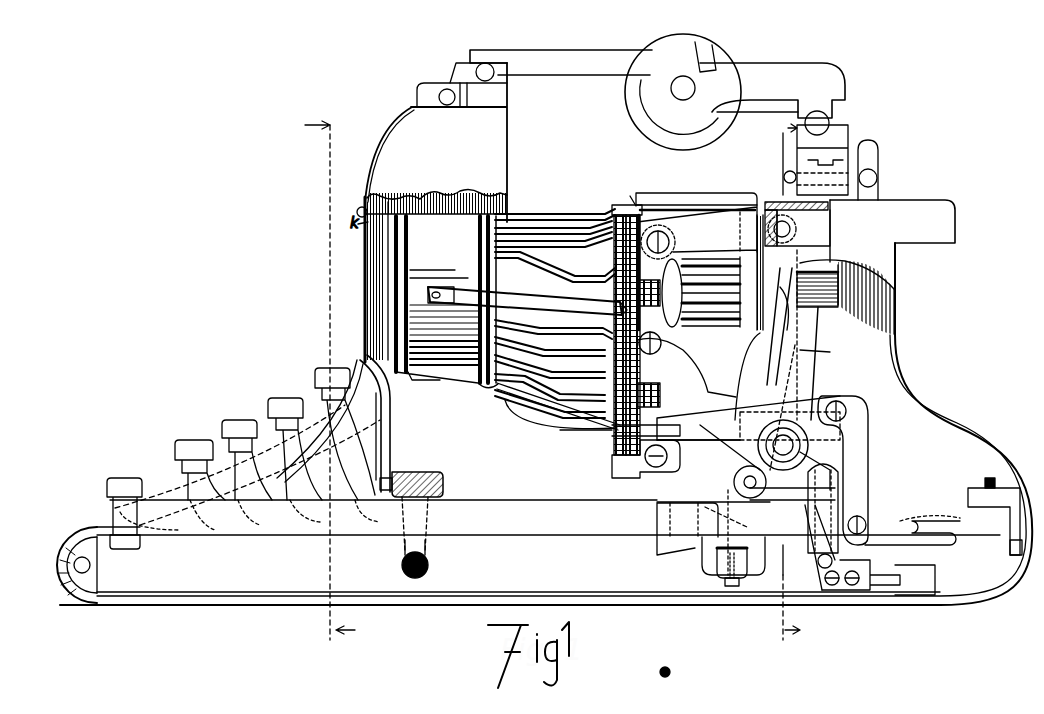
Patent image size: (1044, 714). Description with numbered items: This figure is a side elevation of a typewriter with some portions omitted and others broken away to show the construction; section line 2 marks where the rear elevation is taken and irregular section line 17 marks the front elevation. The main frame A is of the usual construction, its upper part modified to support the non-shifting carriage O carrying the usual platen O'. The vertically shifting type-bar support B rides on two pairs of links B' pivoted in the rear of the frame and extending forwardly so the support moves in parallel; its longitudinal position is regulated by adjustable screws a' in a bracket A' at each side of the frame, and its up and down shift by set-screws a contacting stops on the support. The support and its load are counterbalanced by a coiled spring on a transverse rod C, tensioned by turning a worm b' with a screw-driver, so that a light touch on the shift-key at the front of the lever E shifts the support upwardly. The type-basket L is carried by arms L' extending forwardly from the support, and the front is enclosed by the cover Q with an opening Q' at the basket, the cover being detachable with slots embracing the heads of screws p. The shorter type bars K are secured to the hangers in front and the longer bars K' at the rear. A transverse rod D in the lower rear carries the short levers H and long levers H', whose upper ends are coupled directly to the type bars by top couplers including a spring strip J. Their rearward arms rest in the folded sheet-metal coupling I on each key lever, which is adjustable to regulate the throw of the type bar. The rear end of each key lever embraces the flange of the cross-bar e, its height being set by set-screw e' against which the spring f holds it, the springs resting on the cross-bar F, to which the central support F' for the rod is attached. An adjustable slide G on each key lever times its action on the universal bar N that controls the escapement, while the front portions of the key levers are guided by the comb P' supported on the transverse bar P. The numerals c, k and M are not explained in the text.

The main frame A is at (544, 334).
The bracket A' is at (717, 294).
The type-bar support B is at (620, 438).
The links B' is at (697, 330).
The worm b' is at (785, 407).
The rod C is at (805, 435).
The pin c is at (819, 467).
The rod D is at (734, 486).
The lever E is at (241, 458).
The key lever rail E' is at (488, 449).
The cross-bar e is at (982, 517).
The set-screw e' is at (987, 474).
The cross-bar F is at (878, 590).
The central support F' is at (812, 547).
The spring f is at (917, 543).
The adjustable slide G is at (692, 548).
The levers H is at (786, 344).
The levers H' is at (823, 351).
The coupling I is at (840, 500).
The strip of spring sheet metal J is at (684, 194).
The type bars K is at (555, 242).
The type bars K' is at (553, 310).
The segment pin k is at (620, 212).
The type-basket L is at (447, 304).
The arms L' is at (527, 339).
The segment M is at (630, 192).
The universal bar N is at (728, 582).
The carriage O is at (561, 55).
The platen O' is at (735, 83).
The transverse bar P is at (417, 470).
The screws p is at (380, 480).
The guide or comb P' is at (431, 528).
The cover Q is at (385, 423).
The opening Q' is at (320, 397).
The set-screws a is at (649, 343).
The adjustable screws a' is at (657, 343).
The section line 17 is at (339, 378).
The section line 2 is at (785, 381).